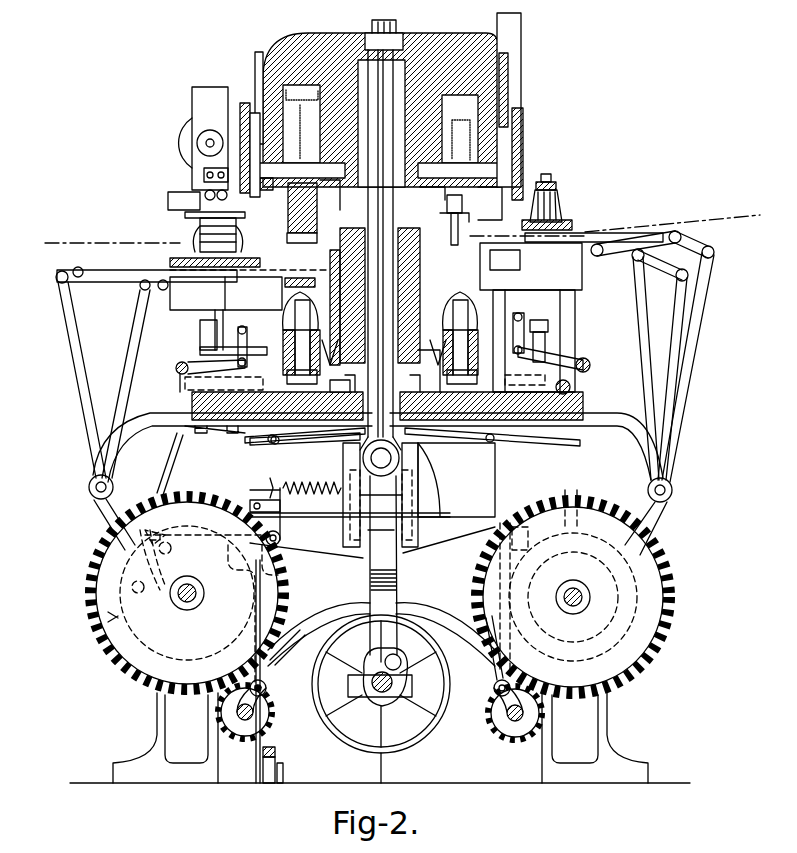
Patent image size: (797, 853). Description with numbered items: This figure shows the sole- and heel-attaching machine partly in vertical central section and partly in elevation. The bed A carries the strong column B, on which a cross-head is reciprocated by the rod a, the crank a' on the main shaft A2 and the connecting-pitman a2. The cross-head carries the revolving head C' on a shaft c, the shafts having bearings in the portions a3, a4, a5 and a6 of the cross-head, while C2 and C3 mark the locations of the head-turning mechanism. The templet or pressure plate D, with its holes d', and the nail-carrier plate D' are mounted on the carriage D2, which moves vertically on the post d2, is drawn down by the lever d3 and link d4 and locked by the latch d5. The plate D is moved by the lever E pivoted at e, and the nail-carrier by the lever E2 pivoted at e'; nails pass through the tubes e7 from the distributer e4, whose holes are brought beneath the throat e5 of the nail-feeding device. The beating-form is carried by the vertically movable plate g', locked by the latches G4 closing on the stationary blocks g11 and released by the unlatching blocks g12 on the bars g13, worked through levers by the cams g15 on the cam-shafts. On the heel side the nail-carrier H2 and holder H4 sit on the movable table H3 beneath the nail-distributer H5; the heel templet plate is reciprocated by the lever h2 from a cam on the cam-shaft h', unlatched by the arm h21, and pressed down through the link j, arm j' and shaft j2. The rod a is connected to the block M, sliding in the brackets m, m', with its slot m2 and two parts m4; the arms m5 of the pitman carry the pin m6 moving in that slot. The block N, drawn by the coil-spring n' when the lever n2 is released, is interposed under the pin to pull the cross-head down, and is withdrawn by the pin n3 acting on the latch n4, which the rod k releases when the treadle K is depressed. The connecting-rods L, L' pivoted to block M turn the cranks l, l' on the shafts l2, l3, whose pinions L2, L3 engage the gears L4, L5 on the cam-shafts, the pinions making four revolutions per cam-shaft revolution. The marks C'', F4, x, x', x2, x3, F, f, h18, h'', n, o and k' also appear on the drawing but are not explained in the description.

The bed A is at (380, 103).
The cavity C'' is at (378, 125).
The shaft c is at (379, 170).
The rod a is at (380, 250).
The column B is at (362, 222).
The revolving head C' is at (308, 213).
The bearing portion of cross-head a4 is at (333, 195).
The bearing portion of cross-head a3 is at (272, 194).
The bearing portion of cross-head a5 is at (422, 185).
The bearing portion of cross-head a6 is at (489, 203).
The vertically-movable plate g' is at (446, 220).
The head-revolving mechanism location C3 is at (524, 133).
The head-revolving mechanism location C2 is at (252, 105).
The throat e5 is at (198, 192).
The distributer e4 is at (246, 214).
The tubes e7 is at (237, 234).
The hatched plate F4 is at (201, 251).
The axis line x is at (387, 232).
The templet or pressure plate D is at (193, 274).
The nail-carrier plate D' is at (191, 281).
The carriage D2 is at (245, 293).
The holes d' is at (312, 285).
The lever E2 is at (75, 380).
The lever E is at (126, 384).
The pivot e is at (221, 481).
The pivot e' is at (544, 484).
The beam F is at (387, 393).
The link d4 is at (205, 340).
The post d2 is at (262, 347).
The lever d3 is at (206, 376).
The latch d5 is at (170, 464).
The latches G4 is at (423, 338).
The stationary blocks g11 is at (391, 353).
The unlatching blocks g12 is at (393, 373).
The piece f is at (500, 363).
The vertically-movable table H3 is at (531, 317).
The nail-carrier H2 is at (576, 237).
The nail-holder H4 is at (572, 226).
The nail-distributer H5 is at (563, 199).
The cap h18 is at (559, 177).
The link j is at (538, 331).
The arm j' is at (550, 350).
The shaft j2 is at (592, 365).
The unlatching-arm h21 is at (567, 381).
The link x' is at (636, 271).
The link x3 is at (660, 273).
The link x2 is at (686, 378).
The lever h2 is at (645, 316).
The bar h'' is at (696, 379).
The rods or bars g13 is at (412, 430).
The block M is at (372, 495).
The bracket m is at (353, 497).
The bracket m' is at (385, 508).
The pin m6 is at (399, 462).
The parts of block m4 is at (400, 496).
The arms m5 is at (382, 526).
The slot m2 is at (368, 534).
The lever n2 is at (280, 448).
The coil-spring n' is at (312, 481).
The block N is at (280, 498).
The rod n is at (287, 516).
The latch n4 is at (209, 603).
The pin n3 is at (161, 561).
The connecting-pitman a2 is at (397, 565).
The main shaft A2 is at (381, 706).
The crank a' is at (390, 677).
The support o is at (425, 733).
The gear L4 is at (120, 668).
The cam-shaft h' is at (380, 607).
The arrow k' is at (207, 590).
The gear L5 is at (633, 678).
The cams g15 is at (628, 588).
The pinion L2 is at (214, 720).
The pinion shaft l2 is at (243, 722).
The crank l is at (261, 696).
The rod k is at (276, 671).
The connecting-rod L is at (381, 634).
The treadle K is at (276, 752).
The pinion L3 is at (545, 714).
The pinion shaft l3 is at (511, 722).
The crank l' is at (489, 704).
The connecting-rod L' is at (481, 655).